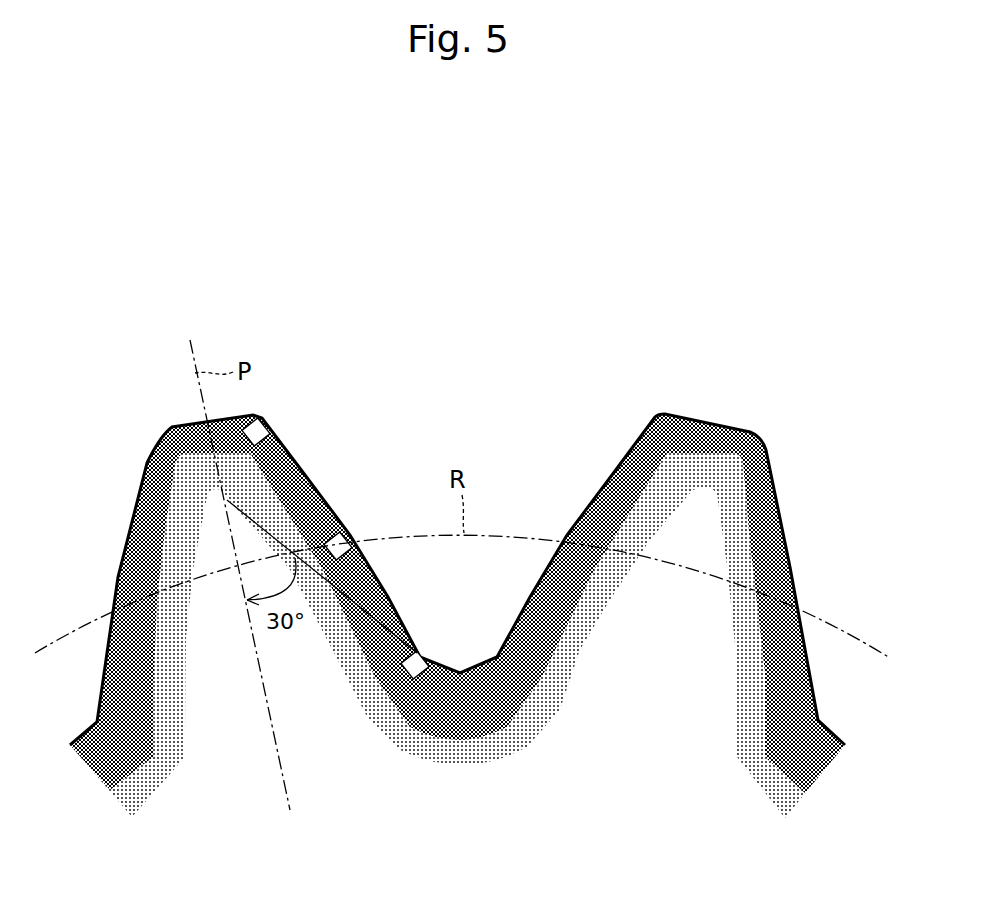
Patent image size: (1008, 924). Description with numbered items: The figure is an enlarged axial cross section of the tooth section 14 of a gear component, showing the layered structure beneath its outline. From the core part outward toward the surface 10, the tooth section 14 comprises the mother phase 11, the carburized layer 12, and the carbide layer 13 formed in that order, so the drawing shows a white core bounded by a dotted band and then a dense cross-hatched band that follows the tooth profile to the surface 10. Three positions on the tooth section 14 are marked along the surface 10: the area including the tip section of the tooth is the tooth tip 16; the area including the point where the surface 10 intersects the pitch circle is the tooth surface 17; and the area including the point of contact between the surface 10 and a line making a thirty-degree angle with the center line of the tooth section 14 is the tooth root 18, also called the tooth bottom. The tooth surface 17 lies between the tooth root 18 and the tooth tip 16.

The surface 10 is at (773, 460).
The mother phase 11 is at (700, 675).
The carburized layer 12 is at (745, 563).
The carbide layer 13 is at (765, 512).
The tooth section 14 is at (471, 615).
The tooth tip 16 is at (262, 430).
The tooth surface 17 is at (348, 545).
The tooth root 18 is at (424, 662).